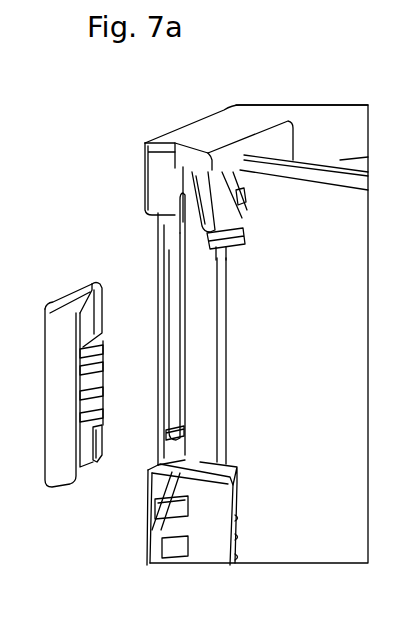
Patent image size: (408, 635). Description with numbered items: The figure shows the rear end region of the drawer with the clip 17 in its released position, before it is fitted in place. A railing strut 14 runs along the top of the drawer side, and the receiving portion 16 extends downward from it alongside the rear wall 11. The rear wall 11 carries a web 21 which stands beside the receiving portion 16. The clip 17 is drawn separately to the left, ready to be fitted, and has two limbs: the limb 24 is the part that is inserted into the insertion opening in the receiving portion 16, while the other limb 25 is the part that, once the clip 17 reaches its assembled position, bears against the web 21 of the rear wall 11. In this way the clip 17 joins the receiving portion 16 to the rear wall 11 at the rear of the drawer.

The rear wall 11 is at (350, 393).
The railing strut 14 is at (292, 109).
The receiving portion 16 is at (170, 236).
The clip 17 is at (63, 455).
The web 21 is at (202, 340).
The limb 24 is at (82, 306).
The limb 25 is at (93, 370).